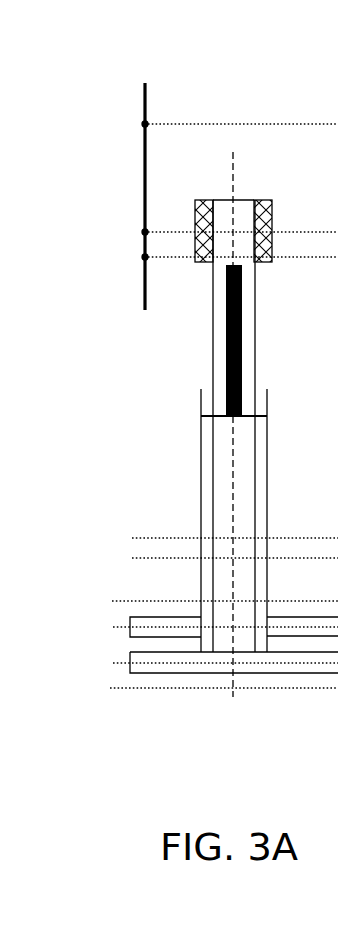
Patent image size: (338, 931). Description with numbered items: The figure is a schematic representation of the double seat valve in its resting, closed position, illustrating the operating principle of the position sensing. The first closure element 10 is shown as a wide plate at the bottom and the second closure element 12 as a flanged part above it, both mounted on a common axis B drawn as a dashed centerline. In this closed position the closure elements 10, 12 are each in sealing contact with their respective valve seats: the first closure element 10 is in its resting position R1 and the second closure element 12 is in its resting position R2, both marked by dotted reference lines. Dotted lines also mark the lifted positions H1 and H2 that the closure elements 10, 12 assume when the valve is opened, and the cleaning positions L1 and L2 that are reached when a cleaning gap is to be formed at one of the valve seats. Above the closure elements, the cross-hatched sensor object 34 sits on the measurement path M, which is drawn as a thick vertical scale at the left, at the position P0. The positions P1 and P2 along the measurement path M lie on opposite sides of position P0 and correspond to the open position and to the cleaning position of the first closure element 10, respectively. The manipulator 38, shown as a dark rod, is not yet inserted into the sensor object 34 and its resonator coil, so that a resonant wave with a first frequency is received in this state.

The first closure element 10 is at (187, 667).
The second closure element 12 is at (177, 625).
The sensor object 34 is at (200, 262).
The manipulator 38 is at (227, 341).
The measurement path M is at (144, 91).
The axis B is at (228, 168).
The position P0 is at (219, 234).
The position P1 is at (219, 127).
The position P2 is at (219, 259).
The position H1 is at (210, 559).
The position H2 is at (210, 536).
The position L1 is at (209, 689).
The position L2 is at (209, 601).
The resting position R1 is at (209, 664).
The resting position R2 is at (209, 627).